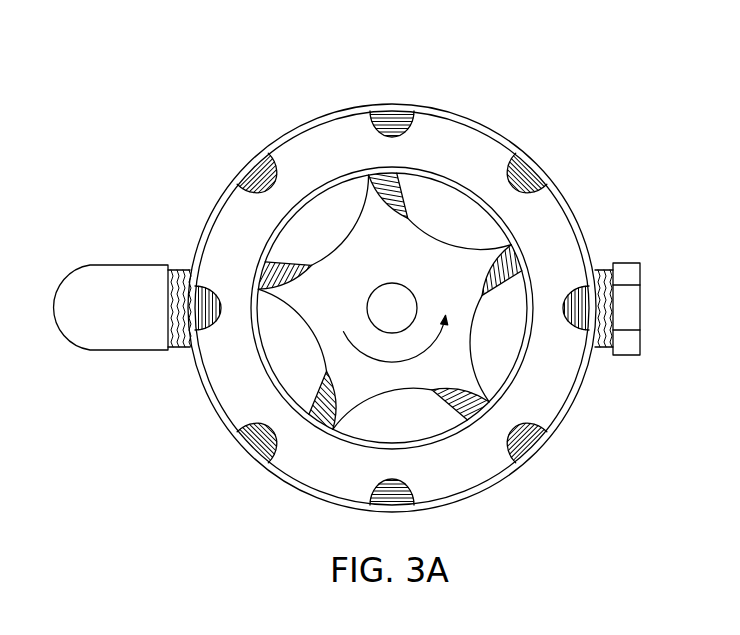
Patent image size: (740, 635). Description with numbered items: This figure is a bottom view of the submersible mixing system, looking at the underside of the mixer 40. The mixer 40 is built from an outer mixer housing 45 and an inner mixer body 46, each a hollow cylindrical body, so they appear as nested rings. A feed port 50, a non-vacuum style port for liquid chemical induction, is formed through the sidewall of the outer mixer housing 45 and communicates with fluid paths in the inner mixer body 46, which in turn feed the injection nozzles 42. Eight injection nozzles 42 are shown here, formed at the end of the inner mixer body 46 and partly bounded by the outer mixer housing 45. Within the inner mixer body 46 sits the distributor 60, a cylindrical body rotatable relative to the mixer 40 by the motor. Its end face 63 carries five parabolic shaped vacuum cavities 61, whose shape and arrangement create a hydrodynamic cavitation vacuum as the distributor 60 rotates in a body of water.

The mixer 40 is at (465, 107).
The injection nozzles 42 is at (386, 104).
The outer mixer housing 45 is at (522, 142).
The inner mixer body 46 is at (547, 232).
The feed port 50 is at (170, 298).
The distributor 60 is at (310, 335).
The parabolic shaped vacuum cavities 61 is at (495, 343).
The end face 63 is at (320, 442).